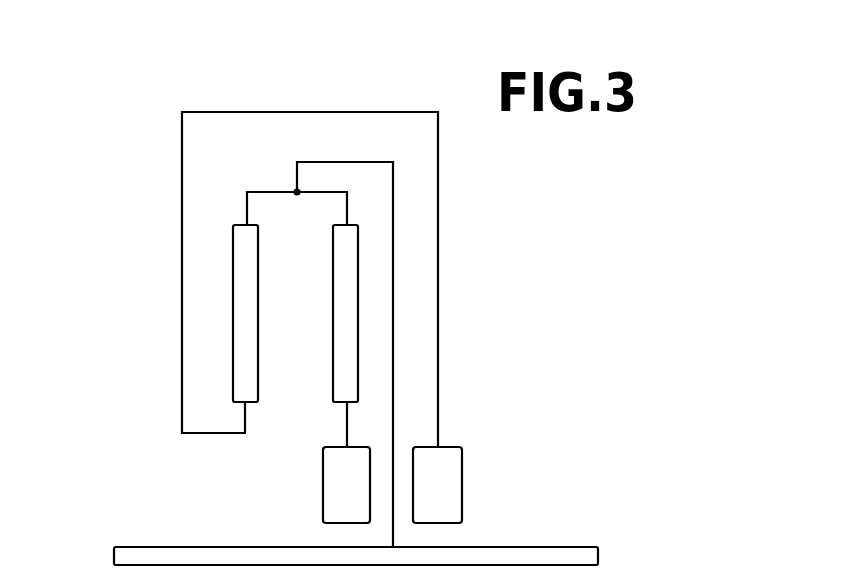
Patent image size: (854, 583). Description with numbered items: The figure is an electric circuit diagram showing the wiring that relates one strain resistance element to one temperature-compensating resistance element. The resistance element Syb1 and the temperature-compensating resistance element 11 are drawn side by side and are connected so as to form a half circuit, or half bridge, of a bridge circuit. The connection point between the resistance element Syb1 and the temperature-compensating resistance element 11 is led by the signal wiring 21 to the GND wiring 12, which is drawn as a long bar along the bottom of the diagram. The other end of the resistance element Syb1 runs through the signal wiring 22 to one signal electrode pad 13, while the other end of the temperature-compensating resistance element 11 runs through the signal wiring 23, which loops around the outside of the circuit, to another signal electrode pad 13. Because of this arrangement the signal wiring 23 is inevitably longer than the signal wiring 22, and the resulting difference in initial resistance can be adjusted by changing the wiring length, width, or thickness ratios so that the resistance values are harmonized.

The temperature-compensating resistance element 11 is at (246, 322).
The GND wiring 12 is at (572, 556).
The signal electrode pad 13 is at (338, 488).
The signal wiring 21 is at (307, 161).
The signal wiring 22 is at (347, 420).
The signal wiring 23 is at (182, 250).
The resistance element Syb1 is at (350, 252).